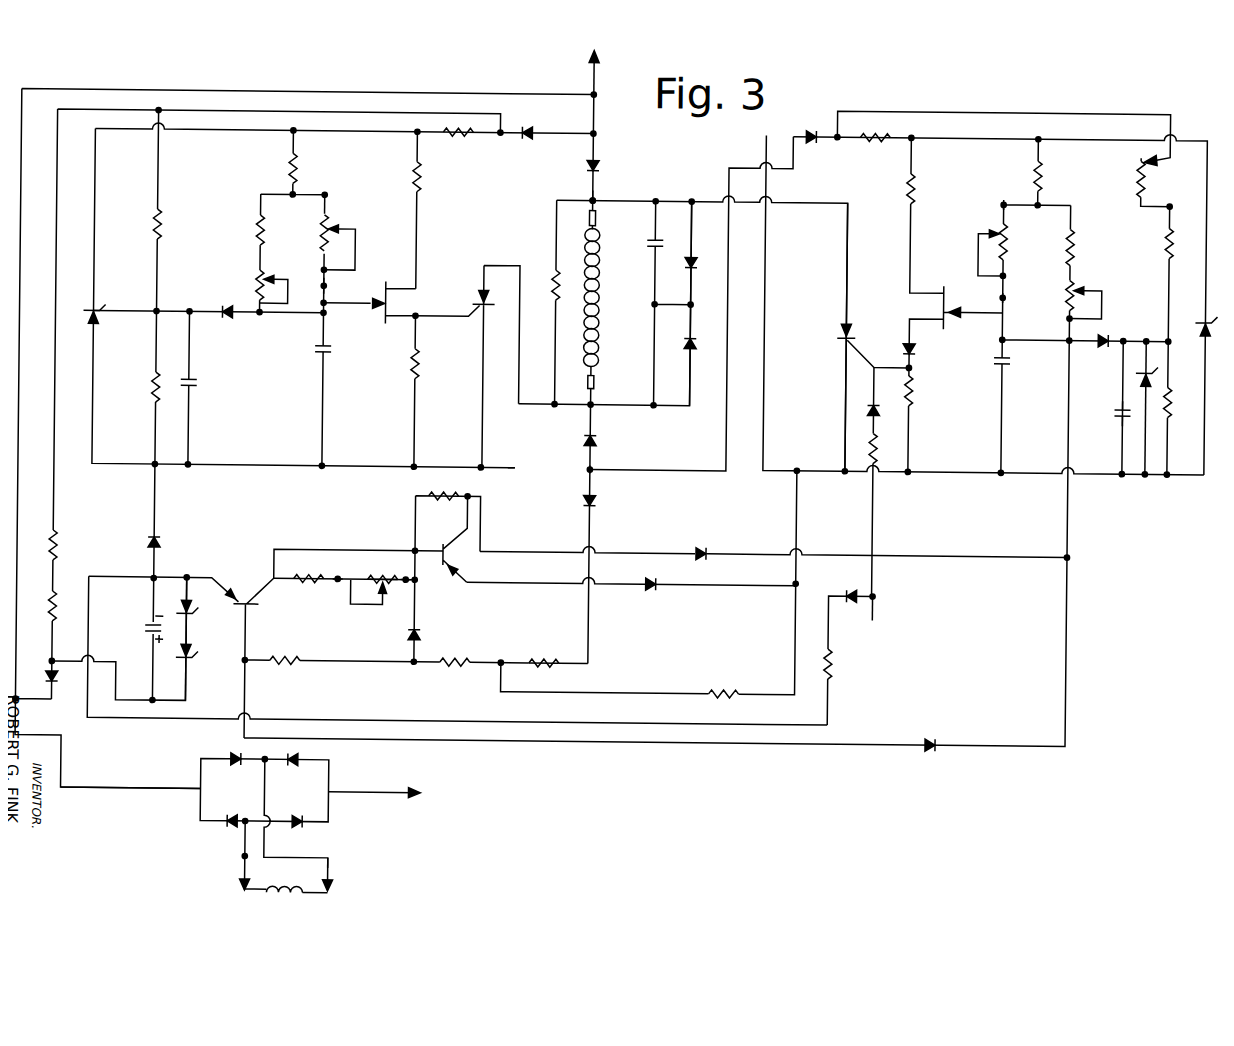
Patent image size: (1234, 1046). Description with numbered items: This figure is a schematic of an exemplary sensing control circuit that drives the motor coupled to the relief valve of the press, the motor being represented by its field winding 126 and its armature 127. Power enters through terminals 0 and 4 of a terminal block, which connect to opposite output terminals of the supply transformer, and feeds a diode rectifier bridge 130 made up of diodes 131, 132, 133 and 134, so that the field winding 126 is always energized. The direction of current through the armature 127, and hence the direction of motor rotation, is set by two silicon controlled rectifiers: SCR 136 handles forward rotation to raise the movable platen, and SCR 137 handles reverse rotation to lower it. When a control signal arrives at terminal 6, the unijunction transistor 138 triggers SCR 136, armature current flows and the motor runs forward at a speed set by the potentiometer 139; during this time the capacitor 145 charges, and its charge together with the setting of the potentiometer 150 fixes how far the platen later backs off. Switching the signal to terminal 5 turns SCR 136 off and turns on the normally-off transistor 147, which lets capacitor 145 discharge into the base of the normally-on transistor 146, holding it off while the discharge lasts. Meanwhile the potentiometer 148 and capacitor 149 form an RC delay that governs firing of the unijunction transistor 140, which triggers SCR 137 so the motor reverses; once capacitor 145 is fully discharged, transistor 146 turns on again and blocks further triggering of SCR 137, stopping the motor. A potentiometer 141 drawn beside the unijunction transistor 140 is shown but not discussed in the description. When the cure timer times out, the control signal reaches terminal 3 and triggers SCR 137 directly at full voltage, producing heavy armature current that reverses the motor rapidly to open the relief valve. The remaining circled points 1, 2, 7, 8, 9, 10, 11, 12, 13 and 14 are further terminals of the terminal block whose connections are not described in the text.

The terminal 0 is at (590, 64).
The terminal 1 is at (249, 859).
The terminal 2 is at (332, 870).
The terminal 3 is at (873, 623).
The terminal 4 is at (389, 792).
The terminal 5 is at (590, 469).
The terminal 6 is at (515, 468).
The terminal 7 is at (339, 583).
The terminal 8 is at (407, 583).
The terminal 9 is at (590, 404).
The terminal 10 is at (590, 200).
The terminal 11 is at (1001, 200).
The terminal 12 is at (1001, 293).
The terminal 13 is at (322, 288).
The terminal 14 is at (322, 197).
The field winding 126 is at (300, 906).
The armature 127 is at (598, 340).
The diode rectifier bridge 130 is at (212, 814).
The diode 131 is at (236, 756).
The diode 132 is at (296, 758).
The diode 133 is at (233, 818).
The diode 134 is at (300, 818).
The silicon controlled rectifier 136 is at (478, 303).
The silicon controlled rectifier 137 is at (841, 326).
The unijunction transistor 138 is at (378, 313).
The potentiometer 139 is at (320, 232).
The unijunction transistor 140 is at (926, 320).
The potentiometer 141 is at (1004, 248).
The capacitor 145 is at (142, 630).
The transistor 146 is at (443, 568).
The transistor 147 is at (266, 596).
The potentiometer 148 is at (1138, 176).
The capacitor 149 is at (1120, 406).
The potentiometer 150 is at (385, 578).